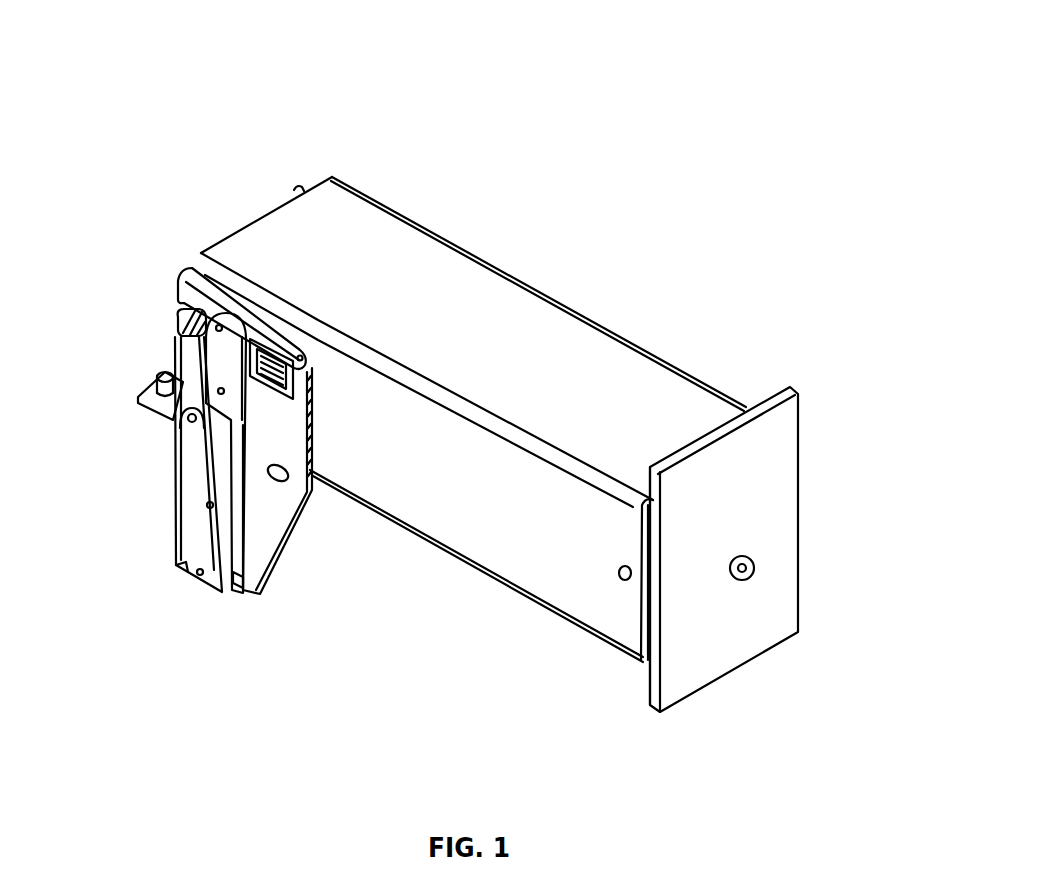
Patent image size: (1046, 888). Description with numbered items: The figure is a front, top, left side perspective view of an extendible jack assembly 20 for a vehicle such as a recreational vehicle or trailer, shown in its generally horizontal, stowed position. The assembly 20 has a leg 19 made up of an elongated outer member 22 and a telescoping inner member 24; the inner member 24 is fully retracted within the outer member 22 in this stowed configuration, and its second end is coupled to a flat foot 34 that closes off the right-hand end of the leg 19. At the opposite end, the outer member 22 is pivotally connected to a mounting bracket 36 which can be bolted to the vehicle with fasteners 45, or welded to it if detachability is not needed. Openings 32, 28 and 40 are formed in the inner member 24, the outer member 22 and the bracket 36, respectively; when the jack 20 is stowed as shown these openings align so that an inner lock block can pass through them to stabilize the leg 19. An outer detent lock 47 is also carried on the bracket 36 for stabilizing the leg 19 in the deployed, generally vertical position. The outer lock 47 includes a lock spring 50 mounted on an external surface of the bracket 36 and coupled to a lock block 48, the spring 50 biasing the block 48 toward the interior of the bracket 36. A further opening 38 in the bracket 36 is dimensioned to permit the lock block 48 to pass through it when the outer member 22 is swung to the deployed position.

The leg 19 is at (654, 350).
The jack assembly 20 is at (604, 102).
The outer member 22 is at (523, 313).
The inner member 24 is at (641, 665).
The opening 28 is at (303, 383).
The opening 32 is at (305, 361).
The foot 34 is at (777, 431).
The mounting bracket 36 is at (273, 530).
The opening 38 is at (238, 580).
The opening 40 is at (293, 400).
The fasteners 45 is at (160, 375).
The outer detent lock 47 is at (160, 544).
The lock block 48 is at (237, 560).
The lock spring 50 is at (193, 568).